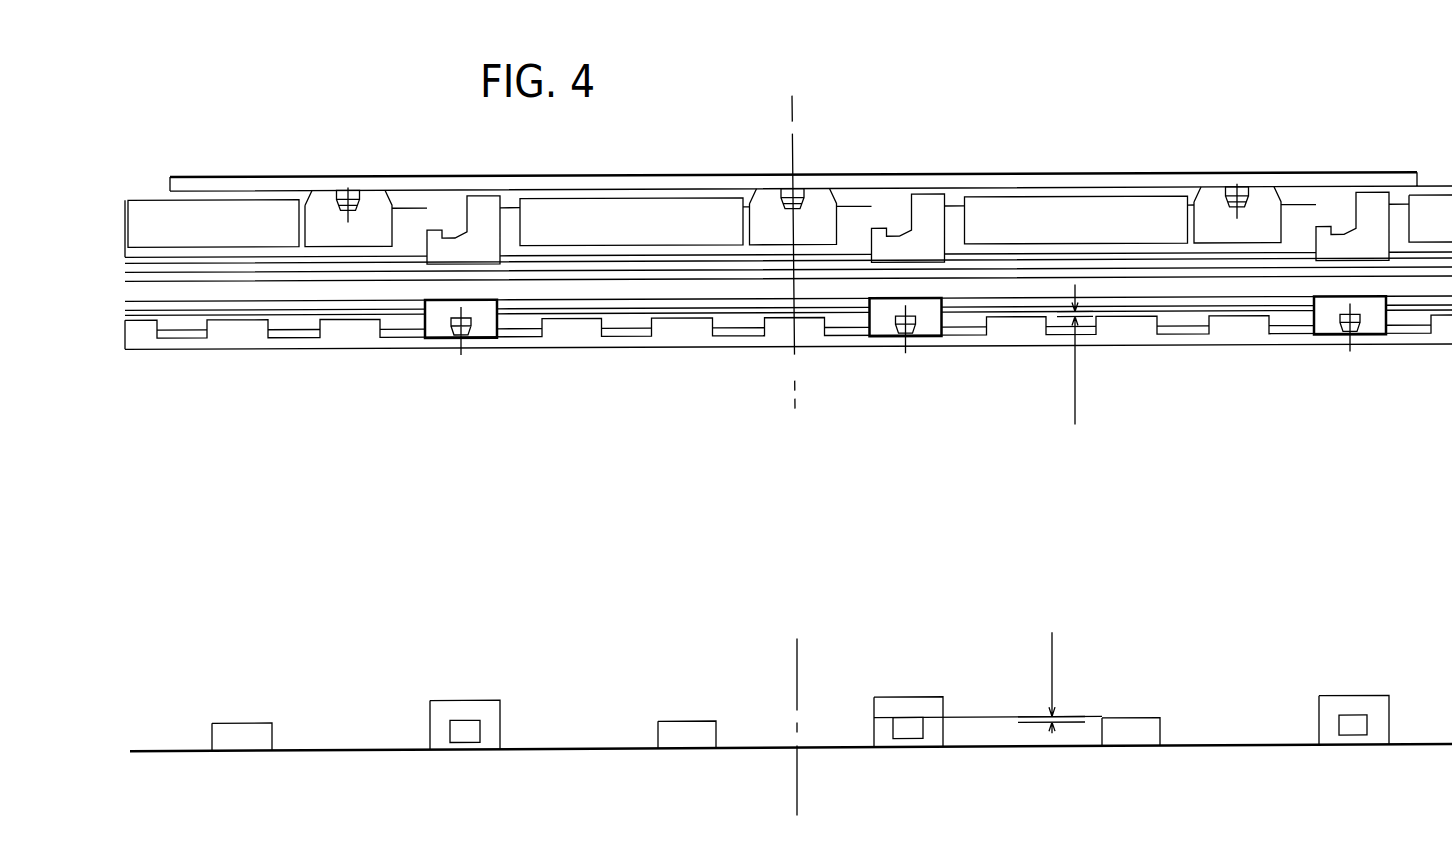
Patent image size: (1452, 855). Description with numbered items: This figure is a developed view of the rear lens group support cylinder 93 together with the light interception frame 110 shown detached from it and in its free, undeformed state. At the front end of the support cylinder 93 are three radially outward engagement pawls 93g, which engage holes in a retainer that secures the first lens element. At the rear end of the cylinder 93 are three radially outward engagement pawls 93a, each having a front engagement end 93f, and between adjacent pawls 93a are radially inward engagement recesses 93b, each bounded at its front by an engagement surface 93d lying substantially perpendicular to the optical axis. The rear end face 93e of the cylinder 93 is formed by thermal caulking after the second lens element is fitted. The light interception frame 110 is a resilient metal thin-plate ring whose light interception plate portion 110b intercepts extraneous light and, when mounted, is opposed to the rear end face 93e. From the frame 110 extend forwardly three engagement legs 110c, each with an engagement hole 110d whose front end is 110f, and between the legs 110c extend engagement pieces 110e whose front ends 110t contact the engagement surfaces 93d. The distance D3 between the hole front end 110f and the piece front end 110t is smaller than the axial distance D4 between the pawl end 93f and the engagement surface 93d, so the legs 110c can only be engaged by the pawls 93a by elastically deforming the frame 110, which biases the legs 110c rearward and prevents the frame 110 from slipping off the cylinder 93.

The rear lens group support cylinder 93 is at (1192, 156).
The engagement pawl 93a is at (465, 338).
The engagement recess 93b is at (232, 340).
The engagement surface 93d is at (241, 318).
The rear end face 93e is at (580, 349).
The front end of engagement pawl 93f is at (900, 317).
The engagement pawl 93g is at (355, 191).
The axial distance D4 is at (1080, 354).
The light interception frame 110 is at (1215, 763).
The light interception plate portion 110b is at (580, 748).
The engagement leg 110c is at (468, 712).
The engagement hole 110d is at (465, 736).
The engagement piece 110e is at (245, 734).
The front end of engagement hole 110f is at (896, 720).
The front end of engagement piece 110t is at (1147, 717).
The distance D3 is at (1051, 682).